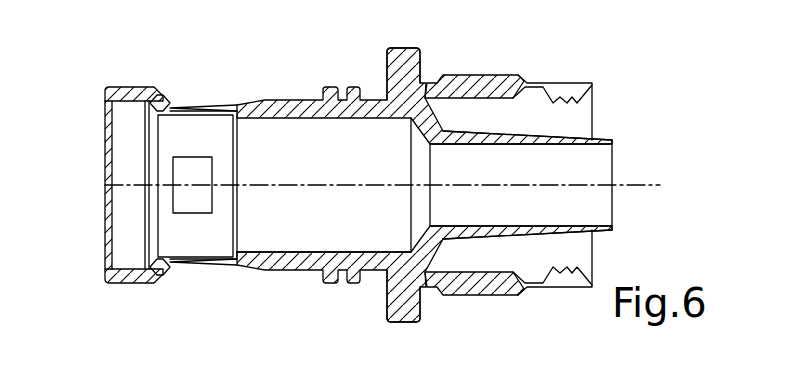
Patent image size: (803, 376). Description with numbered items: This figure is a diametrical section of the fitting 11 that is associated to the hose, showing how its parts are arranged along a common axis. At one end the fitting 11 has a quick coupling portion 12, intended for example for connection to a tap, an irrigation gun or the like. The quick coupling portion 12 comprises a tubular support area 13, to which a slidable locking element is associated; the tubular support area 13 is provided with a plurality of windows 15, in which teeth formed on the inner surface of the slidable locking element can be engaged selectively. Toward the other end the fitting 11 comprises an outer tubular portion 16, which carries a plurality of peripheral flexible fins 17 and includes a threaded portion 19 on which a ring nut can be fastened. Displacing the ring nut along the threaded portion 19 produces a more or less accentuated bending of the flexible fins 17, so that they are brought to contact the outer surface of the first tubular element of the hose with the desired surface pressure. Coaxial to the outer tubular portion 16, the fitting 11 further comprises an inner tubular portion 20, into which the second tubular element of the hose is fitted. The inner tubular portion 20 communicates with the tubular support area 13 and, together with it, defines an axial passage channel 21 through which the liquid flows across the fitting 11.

The fitting 11 is at (313, 272).
The quick coupling portion 12 is at (198, 268).
The tubular support area 13 is at (140, 278).
The windows 15 is at (212, 195).
The outer tubular portion 16 is at (427, 74).
The flexible fins 17 is at (566, 94).
The threaded portion 19 is at (491, 75).
The inner tubular portion 20 is at (606, 138).
The axial passage channel 21 is at (378, 240).